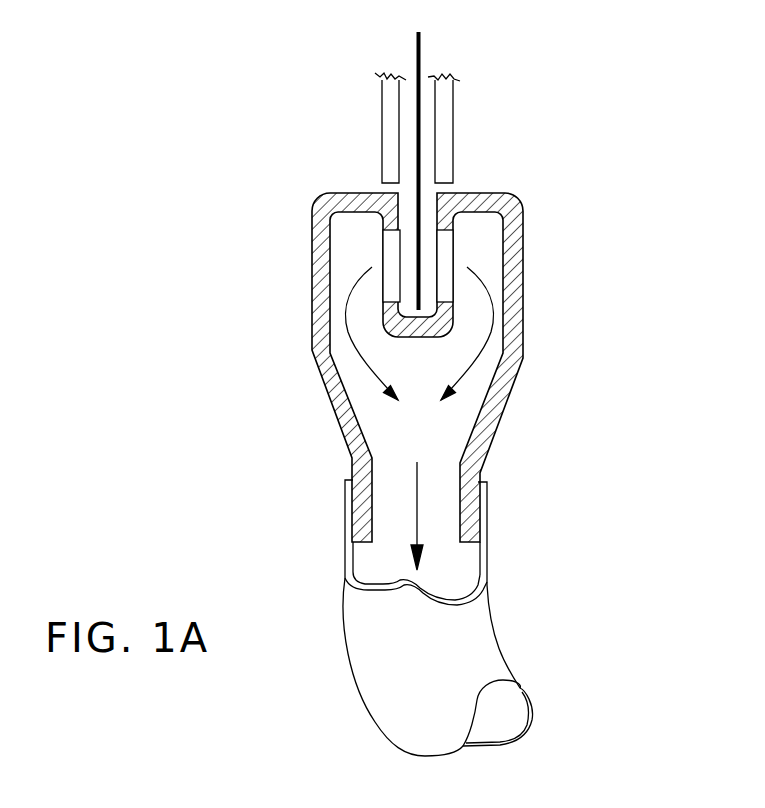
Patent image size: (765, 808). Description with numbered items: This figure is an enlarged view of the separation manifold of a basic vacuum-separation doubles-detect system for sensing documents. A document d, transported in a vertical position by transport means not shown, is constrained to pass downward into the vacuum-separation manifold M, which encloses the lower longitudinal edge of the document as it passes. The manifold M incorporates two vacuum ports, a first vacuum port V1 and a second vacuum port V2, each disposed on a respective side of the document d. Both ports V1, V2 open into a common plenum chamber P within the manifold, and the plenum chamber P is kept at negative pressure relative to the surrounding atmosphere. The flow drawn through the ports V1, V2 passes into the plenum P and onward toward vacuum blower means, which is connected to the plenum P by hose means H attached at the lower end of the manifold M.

The document d is at (420, 52).
The first vacuum port V1 is at (395, 245).
The second vacuum port V2 is at (440, 248).
The vacuum-separation manifold M is at (528, 396).
The plenum chamber P is at (462, 428).
The hose means H is at (487, 638).